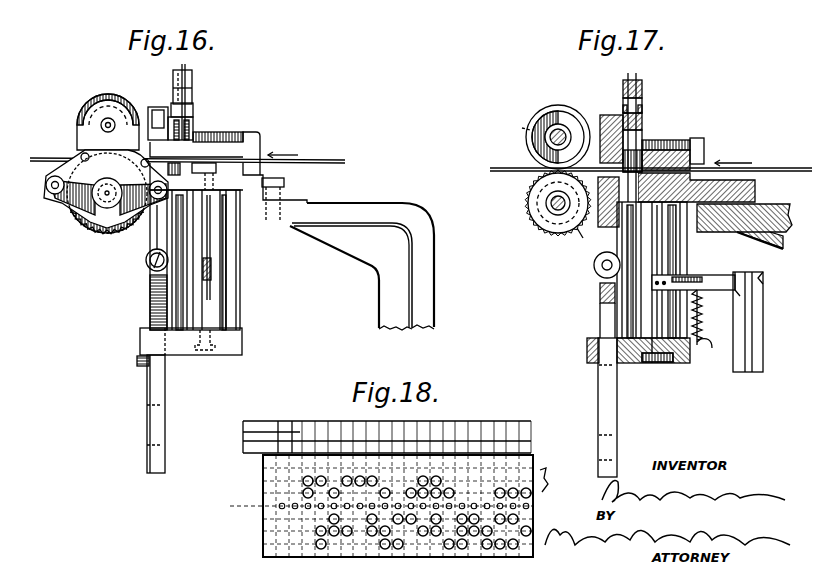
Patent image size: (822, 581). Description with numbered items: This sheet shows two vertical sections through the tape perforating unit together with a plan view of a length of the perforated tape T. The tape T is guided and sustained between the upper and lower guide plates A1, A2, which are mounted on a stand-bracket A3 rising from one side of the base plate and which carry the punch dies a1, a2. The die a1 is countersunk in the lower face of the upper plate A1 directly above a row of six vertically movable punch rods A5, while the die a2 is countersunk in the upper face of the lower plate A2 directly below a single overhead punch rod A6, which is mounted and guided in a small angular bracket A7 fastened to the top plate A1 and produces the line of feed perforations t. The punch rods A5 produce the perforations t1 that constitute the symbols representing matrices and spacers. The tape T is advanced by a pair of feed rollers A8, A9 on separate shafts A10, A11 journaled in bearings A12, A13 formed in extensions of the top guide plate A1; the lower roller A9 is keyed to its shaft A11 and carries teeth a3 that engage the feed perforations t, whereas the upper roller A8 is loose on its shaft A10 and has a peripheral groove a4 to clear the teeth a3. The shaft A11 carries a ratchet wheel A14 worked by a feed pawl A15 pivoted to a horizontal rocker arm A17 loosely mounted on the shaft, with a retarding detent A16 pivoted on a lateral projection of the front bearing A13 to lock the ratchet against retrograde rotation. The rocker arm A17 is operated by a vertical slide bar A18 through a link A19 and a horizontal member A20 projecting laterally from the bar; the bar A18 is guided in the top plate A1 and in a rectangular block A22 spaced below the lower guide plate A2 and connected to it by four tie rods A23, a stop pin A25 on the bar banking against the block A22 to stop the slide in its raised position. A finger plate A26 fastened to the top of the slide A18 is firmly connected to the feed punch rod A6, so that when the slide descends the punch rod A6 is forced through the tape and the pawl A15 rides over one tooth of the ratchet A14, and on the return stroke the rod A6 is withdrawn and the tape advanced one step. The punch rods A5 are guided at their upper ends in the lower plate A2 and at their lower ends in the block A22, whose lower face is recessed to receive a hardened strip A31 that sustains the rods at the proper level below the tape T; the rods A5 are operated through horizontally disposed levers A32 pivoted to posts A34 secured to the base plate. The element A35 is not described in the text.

In FIG. 16, the tape T is at (330, 158).
In FIG. 17, the tape T is at (505, 158).
In FIG. 18, the tape T is at (537, 454).
In FIG. 18, the feed perforations t is at (533, 504).
In FIG. 18, the perforations t1 is at (411, 506).
In FIG. 16, the upper guide plate A1 is at (225, 146).
In FIG. 17, the upper guide plate A1 is at (650, 147).
In FIG. 16, the lower guide plate A2 is at (250, 175).
In FIG. 17, the lower guide plate A2 is at (756, 176).
In FIG. 16, the stand-bracket A3 is at (385, 210).
In FIG. 17, the stand-bracket A3 is at (780, 200).
In FIG. 16, the punch rods A5 is at (211, 260).
In FIG. 17, the punch rods A5 is at (657, 257).
In FIG. 16, the overhead punch rod A6 is at (192, 104).
In FIG. 17, the overhead punch rod A6 is at (643, 100).
In FIG. 16, the angular bracket A7 is at (190, 78).
In FIG. 17, the angular bracket A7 is at (640, 84).
In FIG. 16, the upper feed roller A8 is at (85, 106).
In FIG. 17, the upper feed roller A8 is at (540, 120).
In FIG. 17, the lower feed roller A9 is at (556, 230).
In FIG. 16, the shaft A10 is at (112, 122).
In FIG. 17, the shaft A10 is at (566, 132).
In FIG. 16, the shaft A11 is at (100, 207).
In FIG. 17, the shaft A11 is at (552, 212).
In FIG. 16, the bearing A12 is at (105, 118).
In FIG. 17, the bearing A12 is at (560, 128).
In FIG. 17, the bearing A13 is at (534, 222).
In FIG. 16, the ratchet wheel A14 is at (72, 208).
In FIG. 16, the feed pawl A15 is at (175, 180).
In FIG. 16, the retarding detent A16 is at (68, 164).
In FIG. 16, the rocker arm A17 is at (150, 228).
In FIG. 16, the slide bar A18 is at (150, 300).
In FIG. 17, the slide bar A18 is at (612, 438).
In FIG. 16, the link A19 is at (147, 256).
In FIG. 16, the horizontal member A20 is at (150, 280).
In FIG. 17, the horizontal member A20 is at (597, 268).
In FIG. 16, the rectangular block A22 is at (232, 345).
In FIG. 17, the rectangular block A22 is at (655, 365).
In FIG. 16, the tie rods A23 is at (232, 300).
In FIG. 17, the tie rods A23 is at (627, 300).
In FIG. 16, the stop pin A25 is at (138, 364).
In FIG. 17, the stop pin A25 is at (588, 366).
In FIG. 16, the finger plate A26 is at (193, 120).
In FIG. 17, the finger plate A26 is at (643, 122).
In FIG. 17, the hardened strip A31 is at (650, 363).
In FIG. 16, the levers A32 is at (212, 274).
In FIG. 17, the levers A32 is at (718, 276).
In FIG. 17, the posts A34 is at (748, 372).
In FIG. 17, the spring A35 is at (700, 352).
In FIG. 17, the punch die a1 is at (675, 155).
In FIG. 17, the punch die a2 is at (580, 242).
In FIG. 17, the teeth a3 is at (532, 192).
In FIG. 17, the peripheral groove a4 is at (512, 131).